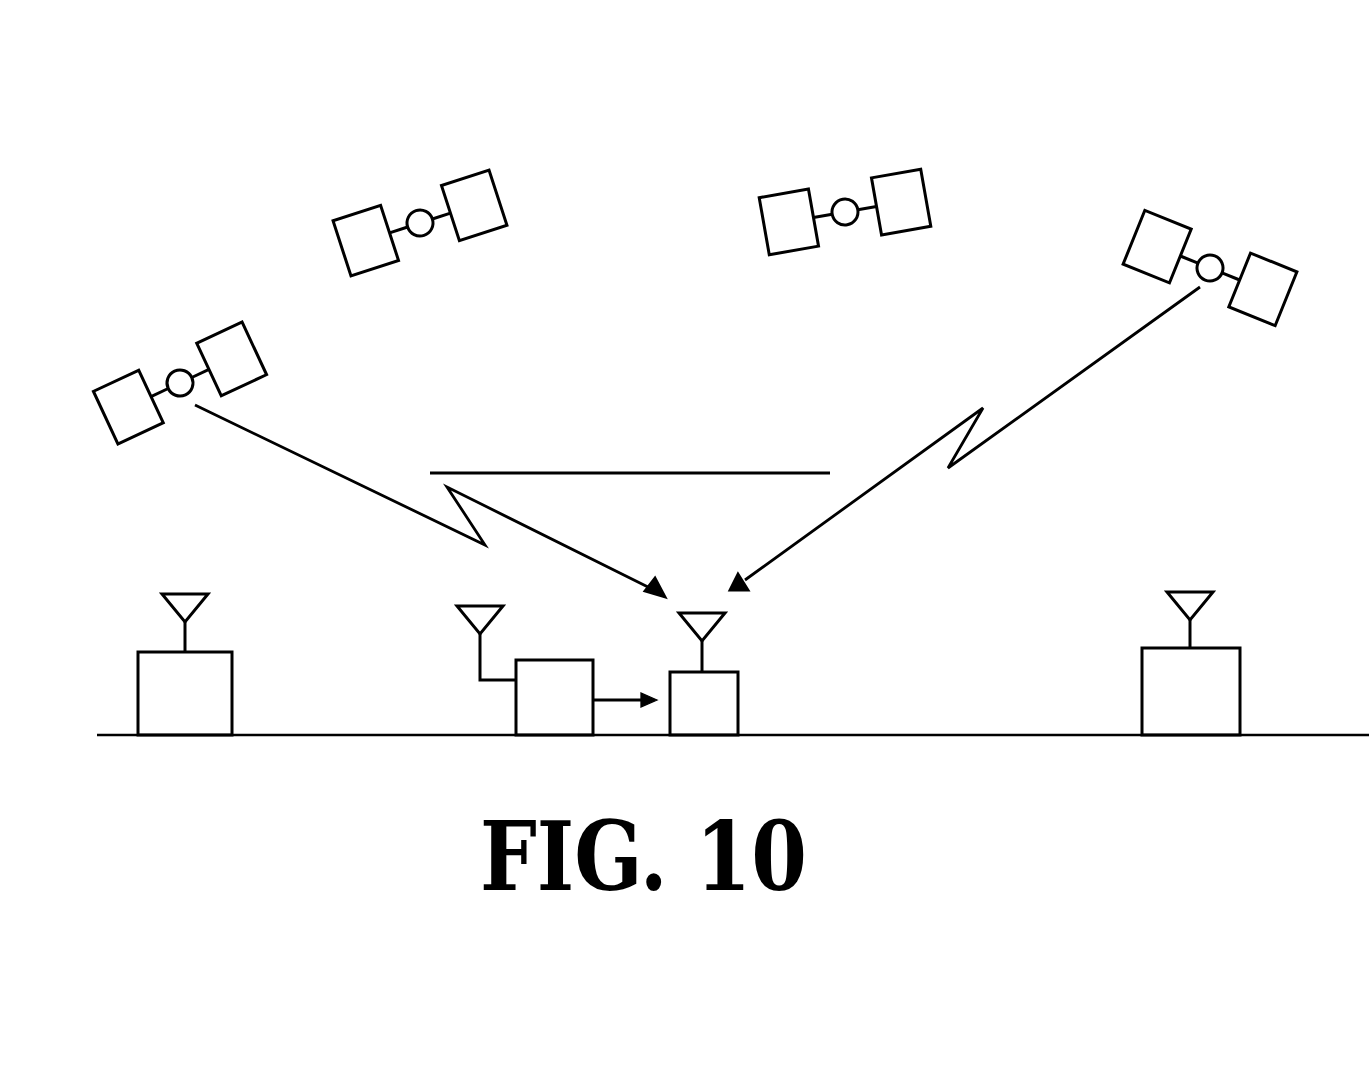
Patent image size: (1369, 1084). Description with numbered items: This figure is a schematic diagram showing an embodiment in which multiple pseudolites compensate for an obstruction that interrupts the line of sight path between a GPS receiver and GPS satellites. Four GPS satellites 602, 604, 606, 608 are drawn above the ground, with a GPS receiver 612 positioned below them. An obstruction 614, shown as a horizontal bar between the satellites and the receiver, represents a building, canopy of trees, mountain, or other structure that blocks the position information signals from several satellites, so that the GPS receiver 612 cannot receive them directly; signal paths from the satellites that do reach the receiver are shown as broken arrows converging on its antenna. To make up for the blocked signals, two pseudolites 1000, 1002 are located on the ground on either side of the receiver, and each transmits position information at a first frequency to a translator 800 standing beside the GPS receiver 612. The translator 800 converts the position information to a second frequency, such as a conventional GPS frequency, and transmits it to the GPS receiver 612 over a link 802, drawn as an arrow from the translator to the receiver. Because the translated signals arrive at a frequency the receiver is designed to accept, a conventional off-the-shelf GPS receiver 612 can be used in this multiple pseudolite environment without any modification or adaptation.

The GPS satellite 602 is at (290, 313).
The GPS satellite 604 is at (495, 185).
The GPS satellite 606 is at (757, 203).
The GPS satellite 608 is at (1297, 287).
The obstruction 614 is at (692, 472).
The translator 800 is at (516, 696).
The link 802 is at (608, 700).
The GPS receiver 612 is at (738, 702).
The pseudolite 1000 is at (232, 683).
The pseudolite 1002 is at (1240, 672).